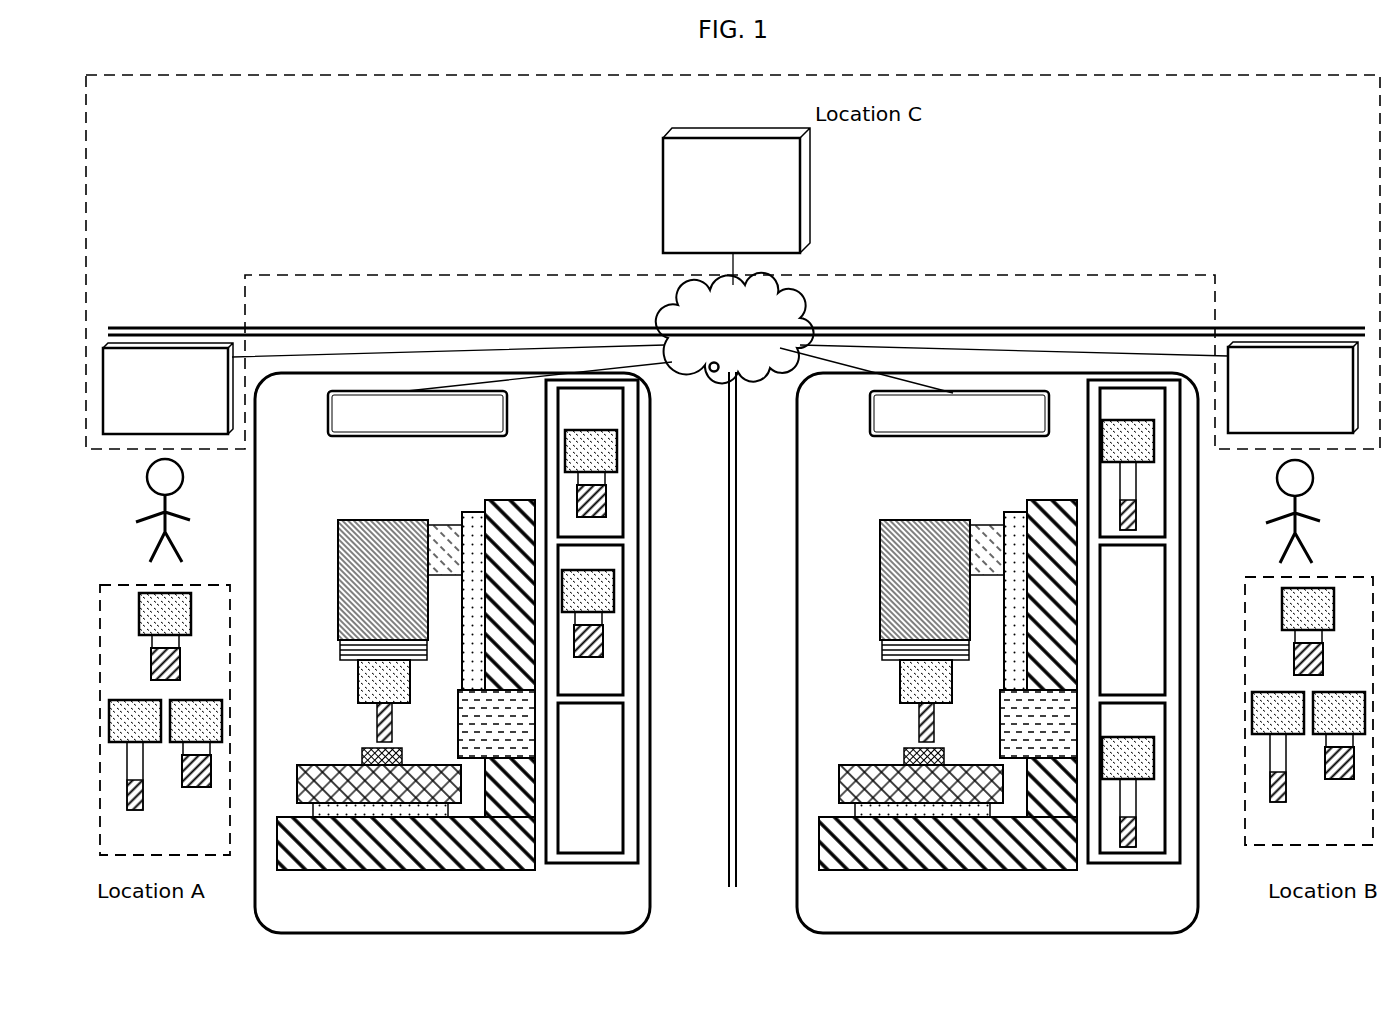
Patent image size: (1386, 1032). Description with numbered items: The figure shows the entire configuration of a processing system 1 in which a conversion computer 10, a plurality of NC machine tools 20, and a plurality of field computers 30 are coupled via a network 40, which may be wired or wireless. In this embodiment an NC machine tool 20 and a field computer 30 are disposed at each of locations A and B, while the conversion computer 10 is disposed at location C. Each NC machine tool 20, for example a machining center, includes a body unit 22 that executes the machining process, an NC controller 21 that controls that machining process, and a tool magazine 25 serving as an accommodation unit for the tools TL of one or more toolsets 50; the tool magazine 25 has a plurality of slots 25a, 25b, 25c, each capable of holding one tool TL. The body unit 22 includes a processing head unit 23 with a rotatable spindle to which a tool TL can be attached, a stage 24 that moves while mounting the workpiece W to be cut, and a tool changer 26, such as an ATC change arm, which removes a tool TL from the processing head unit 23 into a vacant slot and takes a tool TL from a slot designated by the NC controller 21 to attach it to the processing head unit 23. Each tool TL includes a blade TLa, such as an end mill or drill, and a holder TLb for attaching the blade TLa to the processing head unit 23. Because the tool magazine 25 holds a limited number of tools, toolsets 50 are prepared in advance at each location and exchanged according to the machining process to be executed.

The processing system 1 is at (1001, 109).
The conversion computer 10 is at (752, 130).
The NC machine tool 20 is at (652, 890).
The NC controller 21 is at (341, 438).
The body unit 22 is at (498, 870).
The processing head unit 23 is at (339, 621).
The stage 24 is at (301, 770).
The tool magazine 25 is at (639, 434).
The slot 25a is at (624, 528).
The slot 25b is at (624, 650).
The slot 25c is at (624, 766).
The tool changer 26 is at (487, 718).
The field computer 30 is at (185, 434).
The network 40 is at (668, 306).
The toolset 50 is at (130, 588).
The tool TL is at (614, 506).
The blade TLa is at (397, 720).
The holder TLb is at (403, 678).
The workpiece W is at (362, 755).